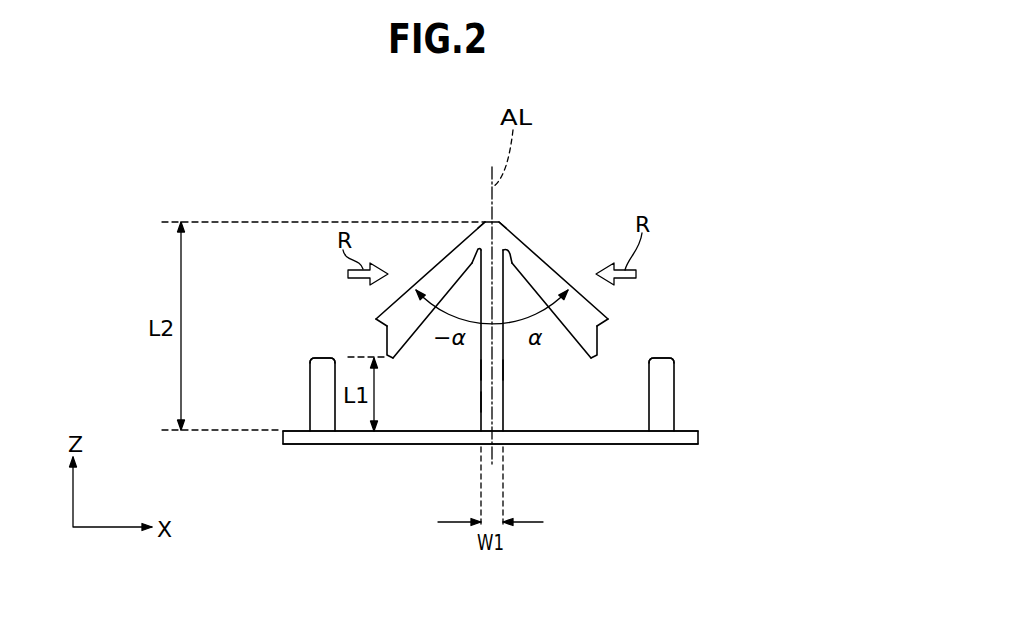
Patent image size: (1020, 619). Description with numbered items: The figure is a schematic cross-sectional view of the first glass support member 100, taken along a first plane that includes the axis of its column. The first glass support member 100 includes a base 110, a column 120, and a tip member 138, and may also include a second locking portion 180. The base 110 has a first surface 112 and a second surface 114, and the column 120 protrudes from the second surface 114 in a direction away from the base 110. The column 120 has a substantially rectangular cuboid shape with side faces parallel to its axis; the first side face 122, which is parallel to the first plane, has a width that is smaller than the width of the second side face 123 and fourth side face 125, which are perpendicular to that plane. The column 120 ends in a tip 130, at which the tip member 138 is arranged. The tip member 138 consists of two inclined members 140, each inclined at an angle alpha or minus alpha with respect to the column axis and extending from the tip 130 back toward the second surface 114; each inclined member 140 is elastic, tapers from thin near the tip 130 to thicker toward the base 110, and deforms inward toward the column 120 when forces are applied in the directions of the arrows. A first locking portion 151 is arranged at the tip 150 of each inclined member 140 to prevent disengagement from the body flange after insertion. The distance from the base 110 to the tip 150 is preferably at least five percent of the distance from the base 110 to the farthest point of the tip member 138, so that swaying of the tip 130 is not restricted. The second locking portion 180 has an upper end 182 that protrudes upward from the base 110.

The first glass support member 100 is at (702, 106).
The base 110 is at (698, 435).
The first surface 112 is at (658, 447).
The second surface 114 is at (688, 429).
The column 120 is at (503, 402).
The first side face 122 is at (481, 402).
The second side face 123 is at (481, 370).
The fourth side face 125 is at (503, 370).
The tip 130 is at (518, 262).
The tip member 138 is at (458, 243).
The inclined member 140 is at (421, 281).
The tip of the inclined member 150 is at (387, 347).
The first locking portion 151 is at (377, 327).
The second locking portion 180 is at (307, 390).
The upper end 182 is at (320, 357).